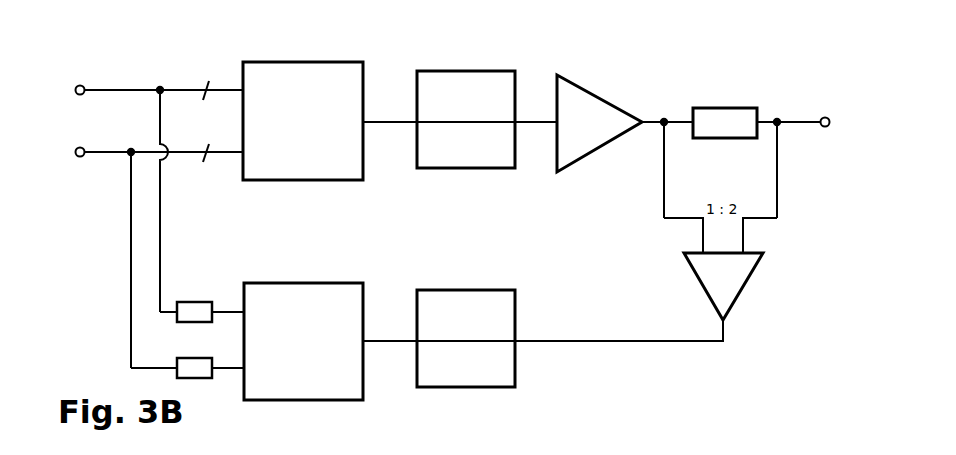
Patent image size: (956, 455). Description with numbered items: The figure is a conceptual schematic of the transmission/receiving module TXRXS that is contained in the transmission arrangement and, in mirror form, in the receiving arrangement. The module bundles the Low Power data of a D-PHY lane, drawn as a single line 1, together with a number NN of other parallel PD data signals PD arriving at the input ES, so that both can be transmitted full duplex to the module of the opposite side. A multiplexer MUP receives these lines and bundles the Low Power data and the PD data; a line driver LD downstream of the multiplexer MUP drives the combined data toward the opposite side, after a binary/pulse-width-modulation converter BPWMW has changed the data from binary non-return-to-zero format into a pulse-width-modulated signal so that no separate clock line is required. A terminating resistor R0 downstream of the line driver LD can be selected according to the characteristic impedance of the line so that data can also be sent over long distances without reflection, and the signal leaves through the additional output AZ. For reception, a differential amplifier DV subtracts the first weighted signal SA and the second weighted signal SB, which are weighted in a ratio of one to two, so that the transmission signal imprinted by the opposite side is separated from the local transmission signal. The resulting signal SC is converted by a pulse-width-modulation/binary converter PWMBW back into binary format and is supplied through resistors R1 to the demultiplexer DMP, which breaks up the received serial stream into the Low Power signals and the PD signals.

The binary and/or parallel signals PD is at (95, 79).
The input of the transmission arrangement ES is at (95, 137).
The number of parallel PD data NN is at (203, 81).
The single line 1 is at (207, 144).
The multiplexer MUP is at (324, 130).
The binary/pulse-width-modulation converter BPWMW is at (464, 170).
The transmission/receiving module of transmission arrangement TXRXS is at (586, 19).
The line driver LD is at (596, 131).
The terminating resistor R0 is at (725, 108).
The additional output of the transmission arrangement AZ is at (838, 111).
The first weighted signal SA is at (664, 166).
The second weighted signal SB is at (777, 168).
The differential amplifier DV is at (698, 289).
The signal after differential amplifier SC is at (616, 342).
The demultiplexer DMP is at (324, 349).
The pulse-width-modulation/binary converter PWMBW is at (467, 290).
The resistor R1 is at (194, 302).